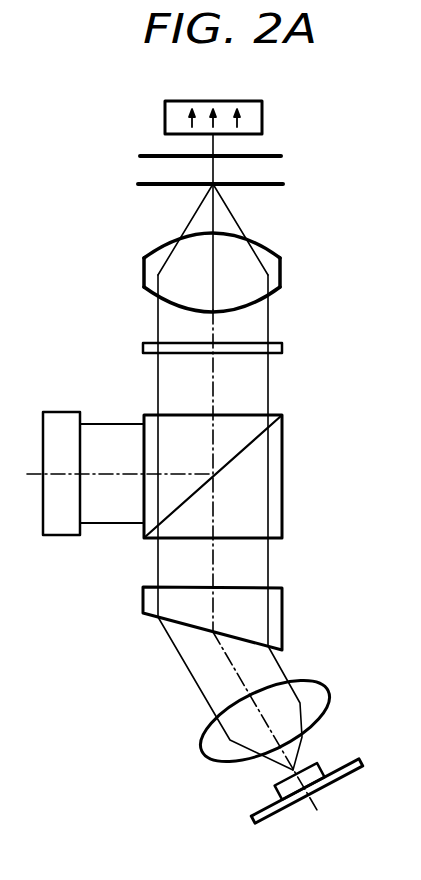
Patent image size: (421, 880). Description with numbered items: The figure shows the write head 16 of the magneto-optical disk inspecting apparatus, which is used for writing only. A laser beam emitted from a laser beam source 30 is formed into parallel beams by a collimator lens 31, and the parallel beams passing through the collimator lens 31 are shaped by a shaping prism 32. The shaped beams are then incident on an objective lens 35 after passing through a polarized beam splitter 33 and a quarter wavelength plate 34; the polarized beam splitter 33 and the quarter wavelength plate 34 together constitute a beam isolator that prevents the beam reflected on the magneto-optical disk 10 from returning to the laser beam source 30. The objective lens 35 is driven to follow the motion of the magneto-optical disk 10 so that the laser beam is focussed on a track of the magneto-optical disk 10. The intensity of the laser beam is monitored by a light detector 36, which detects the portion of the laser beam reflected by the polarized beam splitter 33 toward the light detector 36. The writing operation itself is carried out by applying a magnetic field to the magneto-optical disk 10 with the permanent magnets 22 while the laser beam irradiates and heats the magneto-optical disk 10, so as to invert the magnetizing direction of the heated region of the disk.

The permanent magnets 22 is at (262, 116).
The magneto-optical disk 10 is at (281, 156).
The objective lens 35 is at (270, 247).
The ¼ wavelength plate 34 is at (282, 345).
The light detector 36 is at (62, 412).
The polarized beam splitter 33 is at (282, 477).
The shaping prism 32 is at (282, 610).
The collimator lens 31 is at (329, 692).
The laser beam source 30 is at (330, 763).
The write head 16 is at (108, 819).